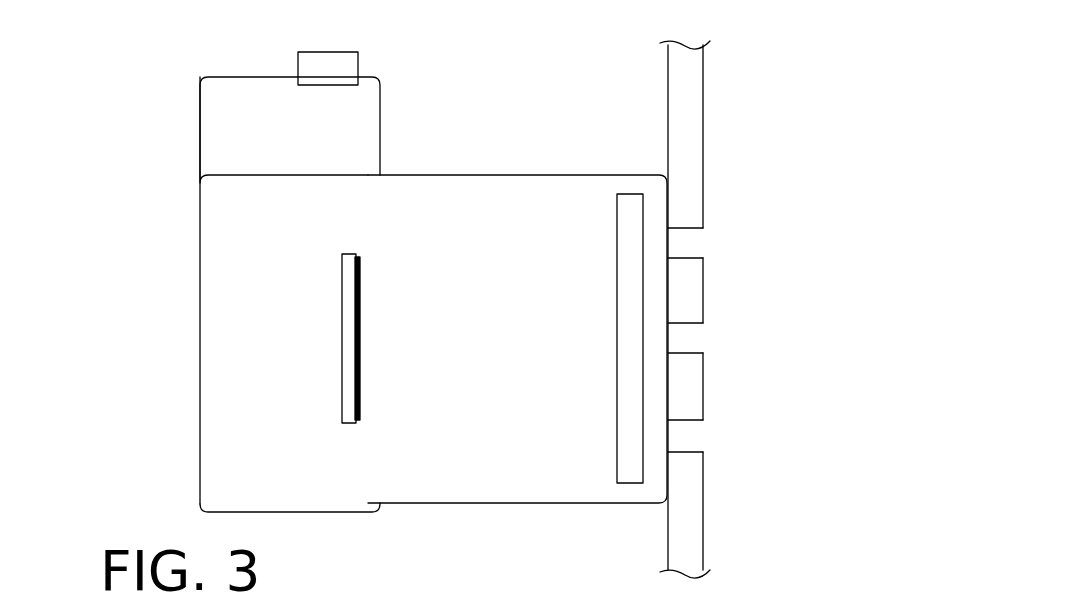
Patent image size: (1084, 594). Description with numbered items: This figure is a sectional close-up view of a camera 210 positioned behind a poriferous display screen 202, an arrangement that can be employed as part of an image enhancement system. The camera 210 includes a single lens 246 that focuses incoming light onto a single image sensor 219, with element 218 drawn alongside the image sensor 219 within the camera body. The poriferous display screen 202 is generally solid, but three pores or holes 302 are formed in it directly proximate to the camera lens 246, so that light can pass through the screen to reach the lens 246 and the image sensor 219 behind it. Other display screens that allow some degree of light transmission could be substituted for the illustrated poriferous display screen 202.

The camera 210 is at (241, 77).
The poriferous display screen 202 is at (705, 140).
The image sensor 218 is at (385, 235).
The image sensor 219 is at (342, 328).
The lens 246 is at (617, 214).
The pores or holes 302 is at (713, 229).